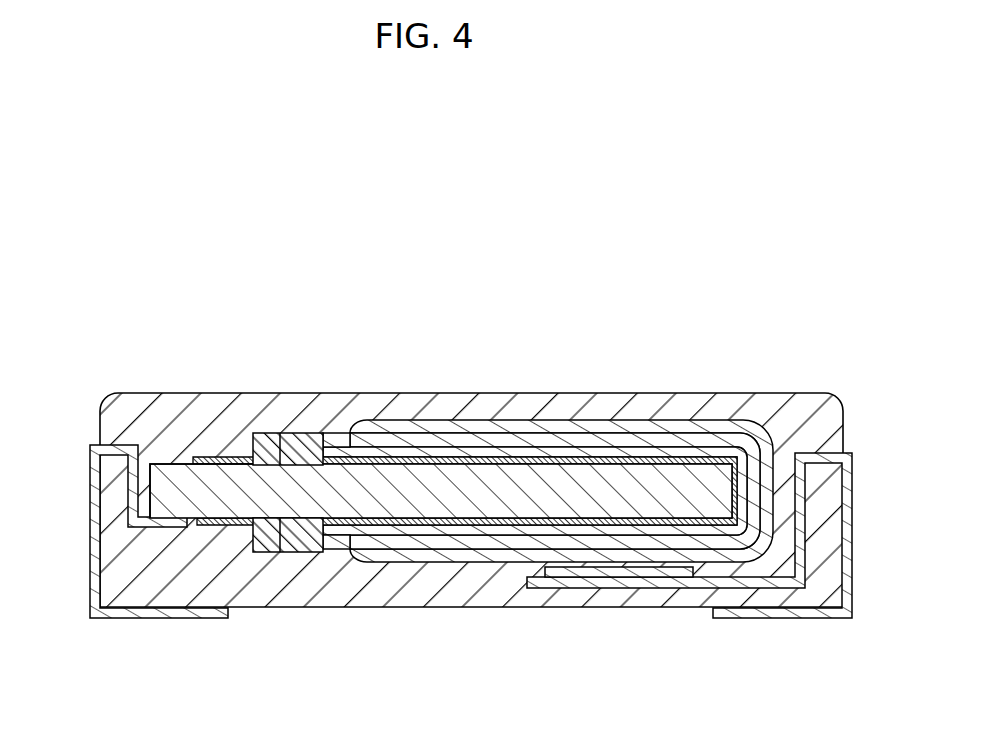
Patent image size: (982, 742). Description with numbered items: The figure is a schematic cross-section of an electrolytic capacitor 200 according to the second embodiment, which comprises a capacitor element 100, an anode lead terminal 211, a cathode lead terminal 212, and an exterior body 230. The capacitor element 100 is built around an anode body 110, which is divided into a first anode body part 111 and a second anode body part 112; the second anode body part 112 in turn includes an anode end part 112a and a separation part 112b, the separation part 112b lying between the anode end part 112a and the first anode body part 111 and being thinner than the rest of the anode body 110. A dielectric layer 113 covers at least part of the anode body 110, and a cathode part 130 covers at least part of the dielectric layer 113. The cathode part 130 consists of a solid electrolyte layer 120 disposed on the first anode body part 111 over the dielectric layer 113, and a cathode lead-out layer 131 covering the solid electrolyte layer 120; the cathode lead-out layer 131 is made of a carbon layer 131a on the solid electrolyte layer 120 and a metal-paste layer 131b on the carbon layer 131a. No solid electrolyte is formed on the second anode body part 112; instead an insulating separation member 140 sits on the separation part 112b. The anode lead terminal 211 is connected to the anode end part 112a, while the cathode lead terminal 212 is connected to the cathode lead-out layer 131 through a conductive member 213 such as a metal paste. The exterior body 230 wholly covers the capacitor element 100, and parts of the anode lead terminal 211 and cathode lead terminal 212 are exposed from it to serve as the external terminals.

The electrolytic capacitor 200 is at (100, 198).
The capacitor element 100 is at (675, 253).
The anode body 110 is at (223, 301).
The first anode body part 111 is at (410, 486).
The second anode body part 112 is at (178, 343).
The anode end part 112a is at (190, 477).
The separation part 112b is at (281, 476).
The dielectric layer 113 is at (538, 462).
The solid electrolyte layer 120 is at (597, 448).
The cathode part 130 is at (570, 314).
The cathode lead-out layer 131 is at (772, 358).
The carbon layer 131a is at (683, 440).
The metal-paste layer 131b is at (746, 427).
The separation member 140 is at (328, 436).
The anode lead terminal 211 is at (170, 609).
The cathode lead terminal 212 is at (787, 619).
The conductive member 213 is at (615, 583).
The exterior body 230 is at (458, 607).